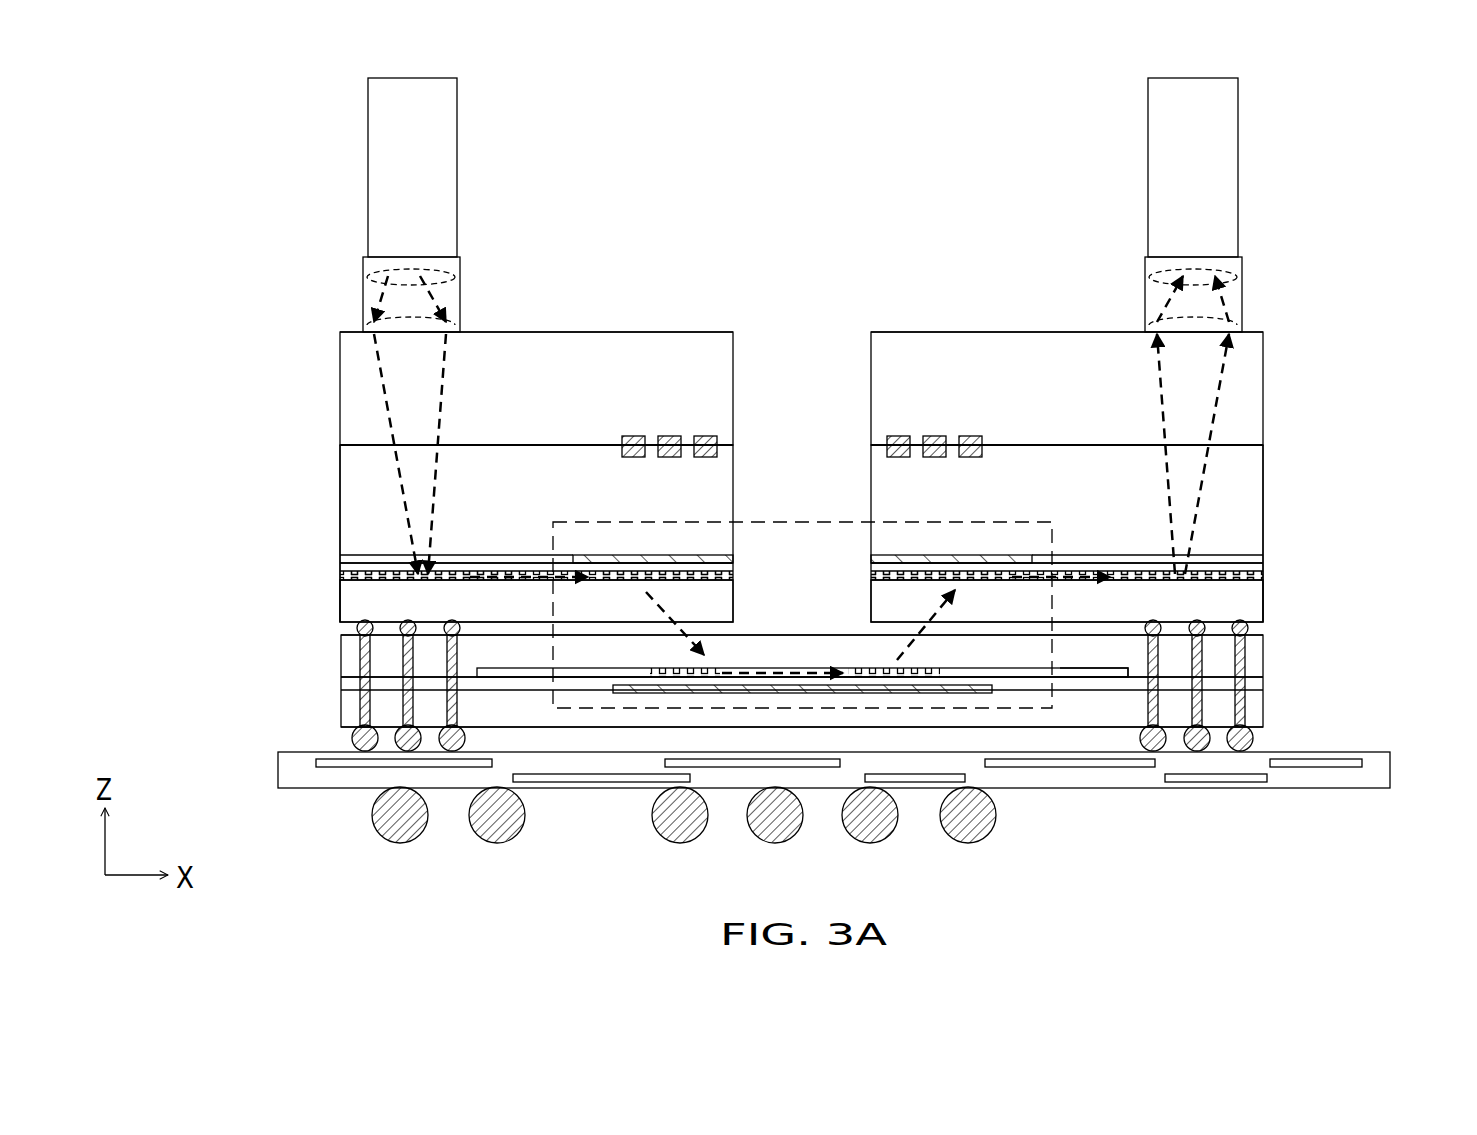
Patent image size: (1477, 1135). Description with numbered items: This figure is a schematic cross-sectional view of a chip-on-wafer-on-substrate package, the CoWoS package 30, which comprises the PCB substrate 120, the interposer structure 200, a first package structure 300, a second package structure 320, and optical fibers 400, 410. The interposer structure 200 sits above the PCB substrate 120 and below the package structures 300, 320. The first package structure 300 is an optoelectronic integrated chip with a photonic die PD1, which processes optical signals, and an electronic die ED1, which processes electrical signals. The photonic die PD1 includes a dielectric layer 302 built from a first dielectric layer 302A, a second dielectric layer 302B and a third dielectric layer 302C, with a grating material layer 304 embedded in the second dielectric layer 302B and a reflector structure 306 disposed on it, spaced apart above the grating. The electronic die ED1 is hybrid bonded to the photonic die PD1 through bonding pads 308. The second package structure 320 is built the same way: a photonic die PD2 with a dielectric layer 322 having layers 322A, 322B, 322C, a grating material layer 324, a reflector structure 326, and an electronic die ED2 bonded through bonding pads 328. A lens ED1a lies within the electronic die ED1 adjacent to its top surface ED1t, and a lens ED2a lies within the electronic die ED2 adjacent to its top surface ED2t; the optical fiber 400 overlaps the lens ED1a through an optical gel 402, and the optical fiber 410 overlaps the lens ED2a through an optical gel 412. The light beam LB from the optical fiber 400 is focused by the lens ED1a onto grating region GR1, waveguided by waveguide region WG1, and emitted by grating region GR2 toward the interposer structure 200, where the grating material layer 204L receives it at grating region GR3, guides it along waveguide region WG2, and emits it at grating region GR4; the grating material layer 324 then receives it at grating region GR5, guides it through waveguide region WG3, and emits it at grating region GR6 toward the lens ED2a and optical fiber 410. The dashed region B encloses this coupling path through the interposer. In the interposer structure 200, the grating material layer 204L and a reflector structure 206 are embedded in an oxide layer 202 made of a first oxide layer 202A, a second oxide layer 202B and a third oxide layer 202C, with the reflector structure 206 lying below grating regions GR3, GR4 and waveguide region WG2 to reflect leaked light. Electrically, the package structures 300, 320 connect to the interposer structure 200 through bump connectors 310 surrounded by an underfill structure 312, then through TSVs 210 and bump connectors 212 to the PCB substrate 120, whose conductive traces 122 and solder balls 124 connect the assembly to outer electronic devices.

The CoWoS package 30 is at (1338, 68).
The optical fiber 400 is at (378, 160).
The optical fiber 410 is at (1228, 160).
The optical gel 402 is at (372, 284).
The optical gel 412 is at (1232, 284).
The electronic die ED1 is at (340, 422).
The electronic die ED2 is at (1263, 422).
The top surface of electronic die ED1 ED1t is at (608, 328).
The top surface of electronic die ED2 ED2t is at (993, 328).
The lens ED1a is at (378, 327).
The lens ED2a is at (1226, 327).
The light beam LB is at (376, 380).
The first package structure 300 is at (697, 284).
The second package structure 320 is at (908, 284).
The dielectric layer 302 is at (584, 72).
The first dielectric layer 302A is at (356, 598).
The second dielectric layer 302B is at (356, 560).
The third dielectric layer 302C is at (309, 470).
The grating material layer 304 is at (340, 577).
The reflector structure 306 is at (675, 556).
The bonding pads 308 is at (720, 452).
The dielectric layer 322 is at (979, 72).
The first dielectric layer 322A is at (1250, 598).
The second dielectric layer 322B is at (1250, 560).
The third dielectric layer 322C is at (1303, 470).
The grating material layer 324 is at (1263, 577).
The reflector structure 326 is at (940, 556).
The bonding pads 328 is at (884, 452).
The photonic die PD1 is at (238, 447).
The photonic die PD2 is at (1366, 447).
The waveguide region WG1 is at (502, 567).
The waveguide region WG2 is at (784, 664).
The waveguide region WG3 is at (1040, 567).
The grating region GR1 is at (438, 584).
The grating region GR2 is at (712, 584).
The grating region GR3 is at (655, 668).
The grating region GR4 is at (948, 670).
The grating region GR5 is at (890, 584).
The grating region GR6 is at (1164, 567).
The optical coupling region B is at (805, 520).
The bump connectors 310 is at (357, 633).
The underfill structure 312 is at (1255, 633).
The interposer structure 200 is at (238, 636).
The oxide layer 202 is at (1366, 665).
The first oxide layer 202A is at (1250, 716).
The second oxide layer 202B is at (1250, 687).
The third oxide layer 202C is at (1250, 660).
The grating material layer 204L is at (1100, 678).
The reflector structure 206 is at (640, 692).
The TSVs 210 is at (365, 652).
The bump connectors 212 is at (356, 734).
The PCB substrate 120 is at (288, 780).
The conductive traces 122 is at (1362, 763).
The solder balls 124 is at (376, 822).